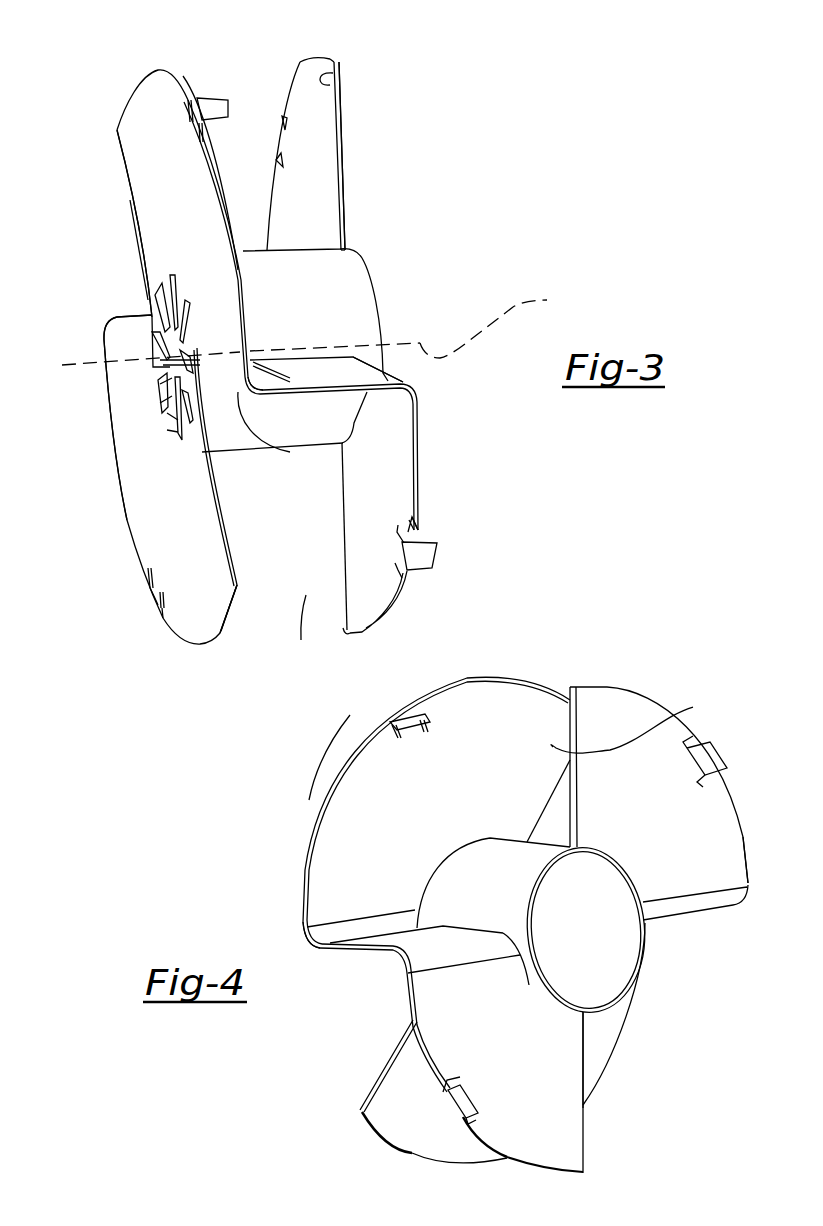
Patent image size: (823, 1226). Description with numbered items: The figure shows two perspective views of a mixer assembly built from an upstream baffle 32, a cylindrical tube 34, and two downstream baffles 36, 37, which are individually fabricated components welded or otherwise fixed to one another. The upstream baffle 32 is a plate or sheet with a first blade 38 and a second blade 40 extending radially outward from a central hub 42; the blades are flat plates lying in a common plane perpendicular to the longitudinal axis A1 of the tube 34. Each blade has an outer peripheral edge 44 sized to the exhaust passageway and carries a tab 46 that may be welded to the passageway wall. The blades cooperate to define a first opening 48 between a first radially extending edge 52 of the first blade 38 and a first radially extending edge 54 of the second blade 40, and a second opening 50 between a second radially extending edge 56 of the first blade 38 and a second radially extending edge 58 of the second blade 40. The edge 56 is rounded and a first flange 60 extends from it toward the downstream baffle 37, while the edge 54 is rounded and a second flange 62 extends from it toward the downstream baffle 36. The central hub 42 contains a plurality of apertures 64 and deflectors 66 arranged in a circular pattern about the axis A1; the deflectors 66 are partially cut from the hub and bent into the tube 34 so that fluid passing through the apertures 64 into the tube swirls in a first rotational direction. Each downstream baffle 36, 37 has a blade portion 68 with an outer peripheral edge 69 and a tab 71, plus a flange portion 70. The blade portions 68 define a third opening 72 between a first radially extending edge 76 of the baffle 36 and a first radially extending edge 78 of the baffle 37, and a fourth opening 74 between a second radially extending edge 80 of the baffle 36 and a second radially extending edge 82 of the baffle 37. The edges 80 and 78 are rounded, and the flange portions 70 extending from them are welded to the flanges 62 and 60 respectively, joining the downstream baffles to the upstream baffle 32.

In FIG. 3, the upstream baffle 32 is at (112, 488).
In FIG. 3, the cylindrical tube 34 is at (345, 278).
In FIG. 4, the cylindrical tube 34 is at (610, 966).
In FIG. 3, the downstream baffle 36 is at (344, 160).
In FIG. 4, the downstream baffle 36 is at (643, 688).
In FIG. 3, the downstream baffle 37 is at (428, 478).
In FIG. 4, the downstream baffle 37 is at (590, 1134).
In FIG. 3, the first blade 38 is at (122, 92).
In FIG. 4, the first blade 38 is at (513, 673).
In FIG. 3, the second blade 40 is at (204, 655).
In FIG. 4, the second blade 40 is at (355, 1112).
In FIG. 3, the central hub 42 is at (243, 378).
In FIG. 3, the outer peripheral edge 44 is at (183, 76).
In FIG. 4, the outer peripheral edge 44 is at (318, 835).
In FIG. 3, the tab 46 is at (214, 102).
In FIG. 4, the tab 46 is at (405, 710).
In FIG. 3, the first opening 48 is at (140, 236).
In FIG. 3, the second opening 50 is at (220, 492).
In FIG. 3, the first radially extending edge 52 is at (132, 188).
In FIG. 3, the first radially extending edge 54 is at (119, 340).
In FIG. 3, the second radially extending edge 56 is at (260, 392).
In FIG. 3, the second radially extending edge 58 is at (236, 570).
In FIG. 3, the first flange 60 is at (307, 400).
In FIG. 4, the first flange 60 is at (340, 953).
In FIG. 3, the second flange 62 is at (145, 315).
In FIG. 3, the apertures 64 is at (167, 430).
In FIG. 3, the deflectors 66 is at (160, 403).
In FIG. 3, the blade portion 68 is at (338, 70).
In FIG. 3, the outer peripheral edge 69 is at (301, 58).
In FIG. 4, the outer peripheral edge 69 is at (743, 845).
In FIG. 3, the flange portion 70 is at (343, 372).
In FIG. 4, the flange portion 70 is at (405, 940).
In FIG. 3, the tab 71 is at (280, 135).
In FIG. 4, the tab 71 is at (722, 752).
In FIG. 3, the third opening 72 is at (350, 212).
In FIG. 4, the third opening 72 is at (635, 722).
In FIG. 3, the fourth opening 74 is at (307, 598).
In FIG. 4, the fourth opening 74 is at (603, 1108).
In FIG. 3, the first radially extending edge 76 is at (338, 112).
In FIG. 4, the first radially extending edge 76 is at (567, 695).
In FIG. 3, the first radially extending edge 78 is at (398, 380).
In FIG. 4, the first radially extending edge 78 is at (437, 955).
In FIG. 4, the second radially extending edge 80 is at (700, 907).
In FIG. 4, the second radially extending edge 82 is at (587, 1158).
In FIG. 3, the longitudinal axis A1 is at (317, 327).